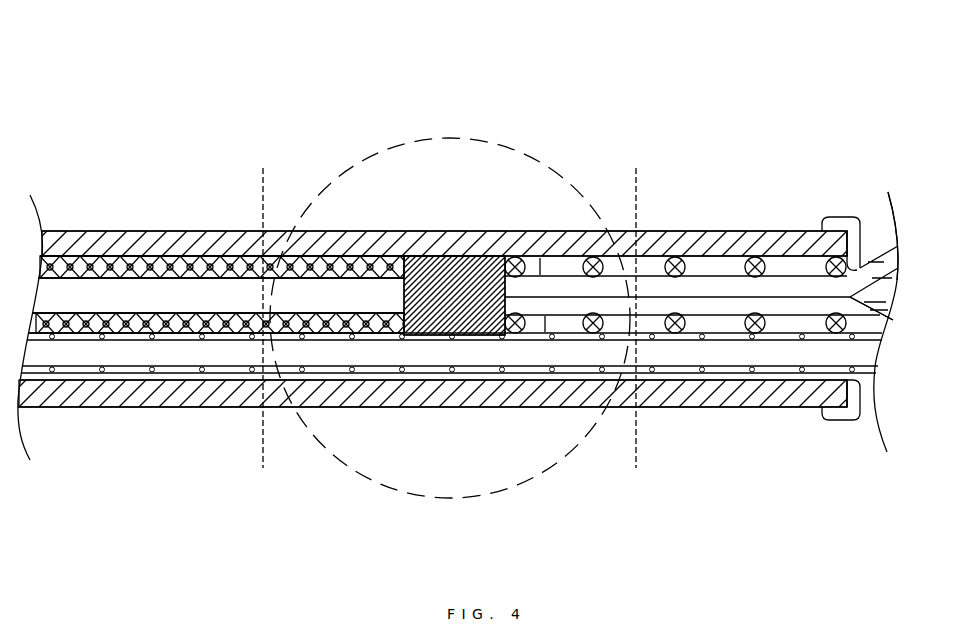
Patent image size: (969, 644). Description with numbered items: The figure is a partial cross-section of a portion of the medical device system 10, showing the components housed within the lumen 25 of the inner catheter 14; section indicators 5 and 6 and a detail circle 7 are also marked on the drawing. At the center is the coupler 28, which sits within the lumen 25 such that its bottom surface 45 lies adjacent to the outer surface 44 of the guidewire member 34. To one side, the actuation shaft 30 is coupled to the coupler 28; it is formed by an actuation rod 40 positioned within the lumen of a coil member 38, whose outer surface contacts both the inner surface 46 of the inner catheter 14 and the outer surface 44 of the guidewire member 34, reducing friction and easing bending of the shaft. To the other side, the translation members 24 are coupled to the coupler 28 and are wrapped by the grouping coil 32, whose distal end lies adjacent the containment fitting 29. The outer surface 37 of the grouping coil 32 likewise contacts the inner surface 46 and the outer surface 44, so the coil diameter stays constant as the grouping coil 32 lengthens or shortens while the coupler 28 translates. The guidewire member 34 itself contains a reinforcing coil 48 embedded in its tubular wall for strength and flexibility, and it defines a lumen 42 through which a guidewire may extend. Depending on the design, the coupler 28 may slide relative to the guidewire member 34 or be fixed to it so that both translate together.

The medical device system 10 is at (741, 68).
The inner catheter 14 is at (150, 233).
The translation members 24 is at (707, 283).
The lumen 25 is at (862, 377).
The coupler 28 is at (455, 264).
The containment fitting 29 is at (843, 414).
The actuation shaft 30 is at (322, 347).
The grouping coil 32 is at (674, 256).
The guidewire member 34 is at (427, 371).
The outer surface 37 is at (762, 248).
The coil member 38 is at (233, 252).
The actuation rod 40 is at (94, 290).
The lumen 42 is at (398, 355).
The outer surface 44 is at (540, 333).
The bottom surface 45 is at (479, 348).
The inner surface 46 is at (580, 257).
The coil 48 is at (656, 374).
The section line 5 is at (263, 468).
The section line 6 is at (636, 468).
The detail circle 7 is at (418, 138).